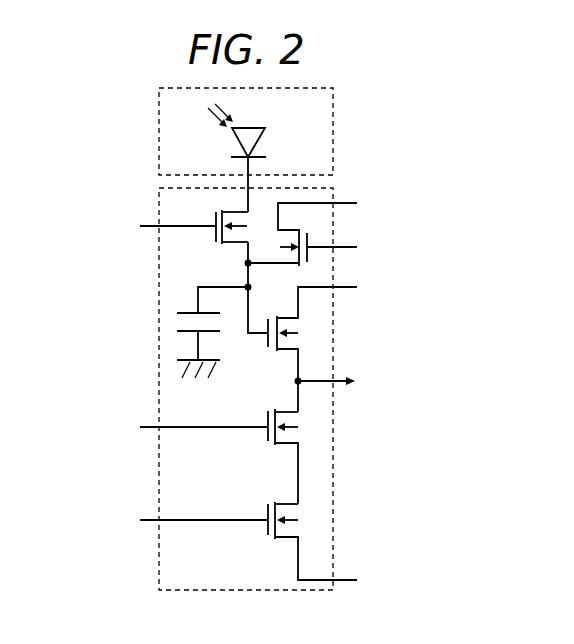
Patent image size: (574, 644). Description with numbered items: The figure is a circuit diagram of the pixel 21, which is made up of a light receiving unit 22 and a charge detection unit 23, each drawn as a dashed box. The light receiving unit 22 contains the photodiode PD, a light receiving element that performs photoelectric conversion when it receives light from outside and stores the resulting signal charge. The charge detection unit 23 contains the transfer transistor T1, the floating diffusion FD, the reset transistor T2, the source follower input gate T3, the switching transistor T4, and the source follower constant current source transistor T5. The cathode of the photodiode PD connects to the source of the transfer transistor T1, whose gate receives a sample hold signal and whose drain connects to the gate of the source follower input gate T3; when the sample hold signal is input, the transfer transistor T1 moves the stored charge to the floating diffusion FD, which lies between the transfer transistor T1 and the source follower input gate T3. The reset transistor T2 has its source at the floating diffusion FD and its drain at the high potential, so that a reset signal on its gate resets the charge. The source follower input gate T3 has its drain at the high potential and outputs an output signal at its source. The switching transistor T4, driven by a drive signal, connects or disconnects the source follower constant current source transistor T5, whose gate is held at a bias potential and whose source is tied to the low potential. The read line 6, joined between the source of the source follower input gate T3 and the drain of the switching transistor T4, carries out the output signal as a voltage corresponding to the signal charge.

The pixel 21 is at (128, 142).
The light receiving unit 22 is at (337, 120).
The charge detection unit 23 is at (336, 452).
The read line 6 is at (337, 378).
The photodiode PD is at (262, 127).
The transfer transistor T1 is at (228, 210).
The reset transistor T2 is at (308, 245).
The source follower input gate T3 is at (286, 316).
The switching transistor T4 is at (283, 446).
The source follower constant current source transistor T5 is at (283, 539).
The floating diffusion FD is at (189, 311).